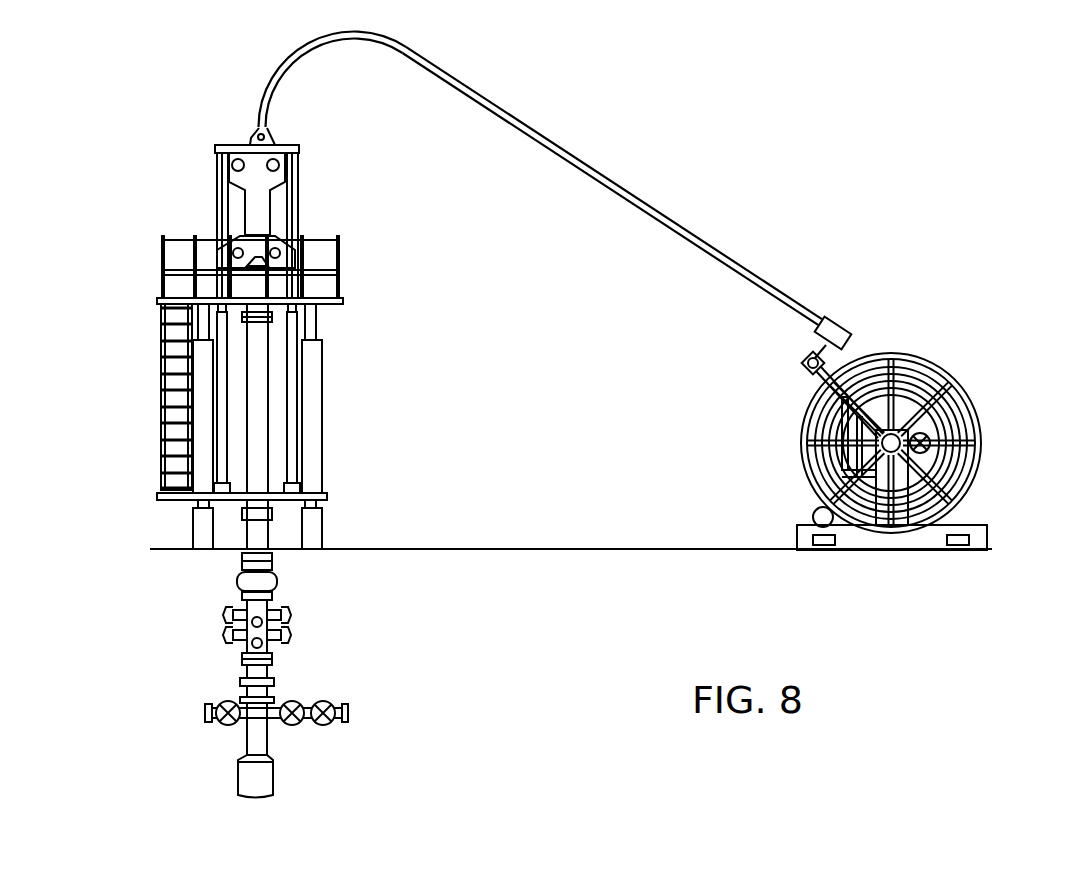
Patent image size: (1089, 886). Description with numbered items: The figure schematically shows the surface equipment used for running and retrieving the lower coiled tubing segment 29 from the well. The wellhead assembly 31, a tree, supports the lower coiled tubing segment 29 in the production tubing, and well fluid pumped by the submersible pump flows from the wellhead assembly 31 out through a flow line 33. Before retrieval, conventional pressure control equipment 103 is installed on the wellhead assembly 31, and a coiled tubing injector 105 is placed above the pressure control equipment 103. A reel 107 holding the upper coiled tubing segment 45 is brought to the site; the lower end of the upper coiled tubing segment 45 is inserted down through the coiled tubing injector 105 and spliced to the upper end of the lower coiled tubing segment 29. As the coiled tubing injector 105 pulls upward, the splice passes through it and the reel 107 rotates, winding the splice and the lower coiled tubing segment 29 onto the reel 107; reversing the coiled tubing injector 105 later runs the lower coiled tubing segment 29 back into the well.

The lower coiled tubing segment 29 is at (503, 110).
The upper coiled tubing segment 45 is at (725, 258).
The coiled tubing injector 105 is at (320, 390).
The reel 107 is at (970, 392).
The pressure control equipment 103 is at (280, 675).
The flow line 33 is at (350, 710).
The wellhead assembly 31 is at (268, 738).